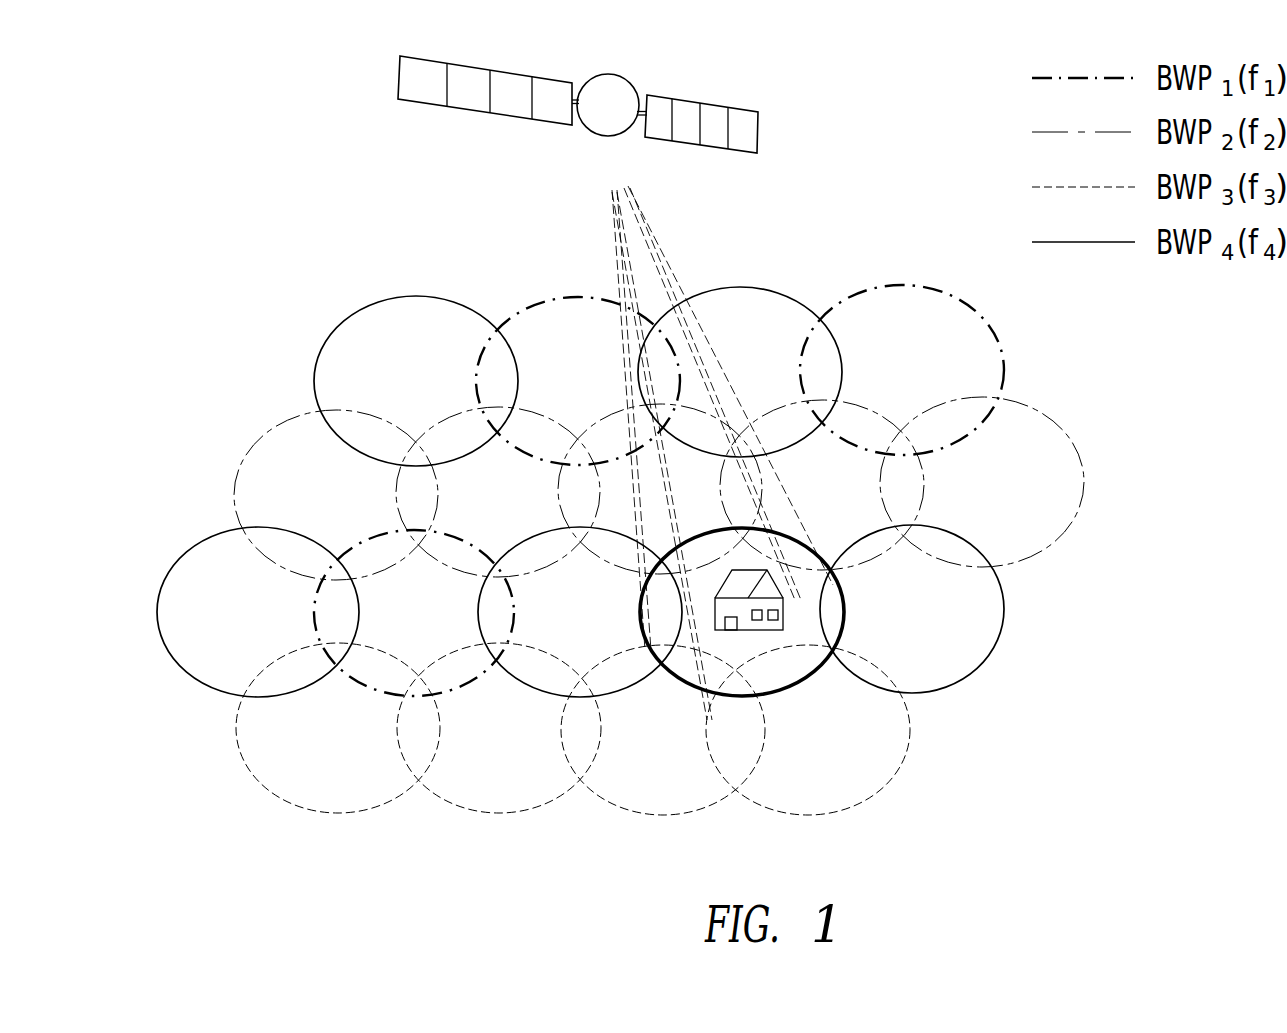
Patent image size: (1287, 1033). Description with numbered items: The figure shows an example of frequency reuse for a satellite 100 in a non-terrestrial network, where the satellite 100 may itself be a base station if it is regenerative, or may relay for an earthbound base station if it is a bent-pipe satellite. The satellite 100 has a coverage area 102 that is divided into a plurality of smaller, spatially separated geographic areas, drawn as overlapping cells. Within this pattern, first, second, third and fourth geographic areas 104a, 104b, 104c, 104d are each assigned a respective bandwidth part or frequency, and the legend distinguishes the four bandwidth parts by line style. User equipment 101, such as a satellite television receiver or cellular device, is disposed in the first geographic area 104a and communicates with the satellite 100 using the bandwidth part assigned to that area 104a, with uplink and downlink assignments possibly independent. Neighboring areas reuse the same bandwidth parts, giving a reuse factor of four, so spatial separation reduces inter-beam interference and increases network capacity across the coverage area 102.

The satellite 100 is at (718, 102).
The user equipment 101 is at (736, 630).
The coverage area 102 is at (210, 398).
The first geographic area 104a is at (783, 693).
The second geographic area 104b is at (852, 563).
The third geographic area 104c is at (973, 565).
The fourth geographic area 104d is at (958, 677).